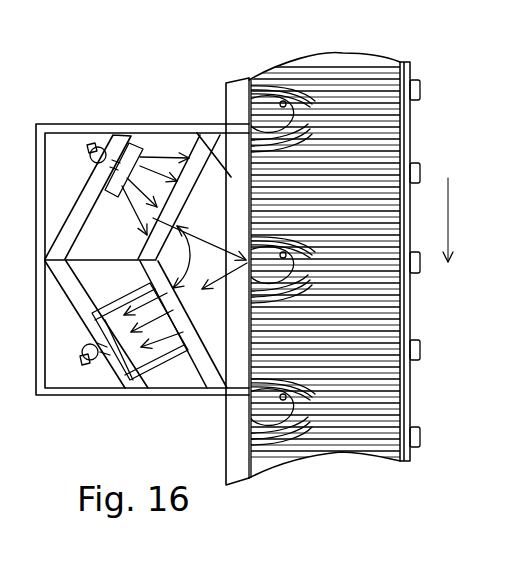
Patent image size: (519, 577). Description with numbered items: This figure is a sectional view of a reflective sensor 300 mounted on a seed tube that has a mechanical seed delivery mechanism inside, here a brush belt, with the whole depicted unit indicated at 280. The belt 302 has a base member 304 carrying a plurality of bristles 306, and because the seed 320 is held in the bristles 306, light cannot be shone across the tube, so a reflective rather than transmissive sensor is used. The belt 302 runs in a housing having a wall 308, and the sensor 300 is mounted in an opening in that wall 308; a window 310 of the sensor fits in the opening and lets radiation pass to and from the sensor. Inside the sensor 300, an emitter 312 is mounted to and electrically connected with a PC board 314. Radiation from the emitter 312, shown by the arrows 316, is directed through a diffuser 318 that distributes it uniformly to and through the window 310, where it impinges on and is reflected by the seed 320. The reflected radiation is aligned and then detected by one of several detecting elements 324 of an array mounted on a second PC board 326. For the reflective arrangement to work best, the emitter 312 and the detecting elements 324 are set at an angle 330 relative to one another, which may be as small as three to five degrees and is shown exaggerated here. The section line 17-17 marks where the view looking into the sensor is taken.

The section line 17- 17 is at (226, 83).
The air handling unit 280 is at (112, 4).
The reflective sensor 300 is at (72, 195).
The belt 302 is at (423, 153).
The base member 304 is at (407, 312).
The bristles 306 is at (373, 390).
The housing wall 308 is at (227, 112).
The window 310 is at (176, 190).
The emitter 312 is at (142, 149).
The PC board 314 is at (82, 160).
The arrows 316 is at (156, 190).
The diffuser 318 is at (146, 237).
The seed 320 is at (272, 113).
The detecting elements 324 is at (146, 392).
The PC board 326 is at (84, 331).
The angle 330 is at (140, 271).